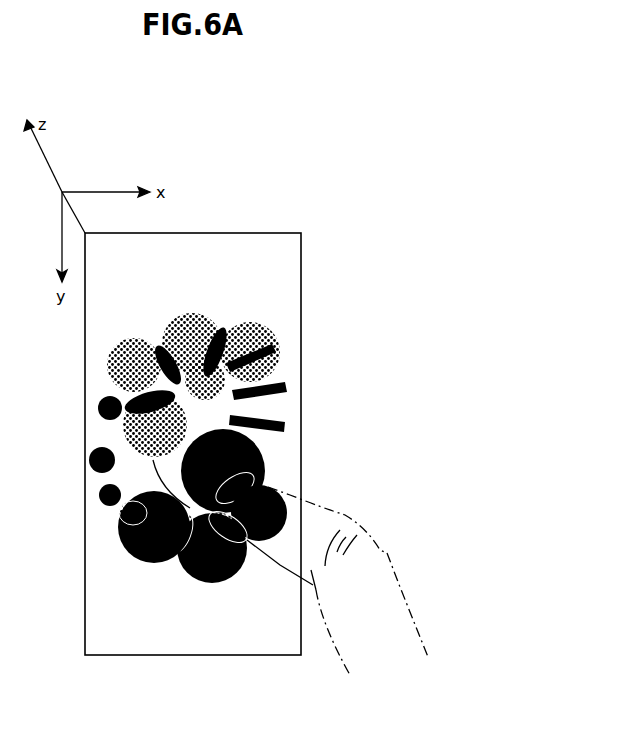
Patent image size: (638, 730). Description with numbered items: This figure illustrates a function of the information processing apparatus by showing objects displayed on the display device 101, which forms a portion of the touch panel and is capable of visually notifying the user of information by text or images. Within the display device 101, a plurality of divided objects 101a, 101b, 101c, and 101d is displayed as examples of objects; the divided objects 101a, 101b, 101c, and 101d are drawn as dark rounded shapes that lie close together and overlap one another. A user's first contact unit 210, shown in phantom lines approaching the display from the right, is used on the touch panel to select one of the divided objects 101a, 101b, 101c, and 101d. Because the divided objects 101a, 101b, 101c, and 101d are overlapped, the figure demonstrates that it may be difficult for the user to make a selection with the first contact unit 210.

The display device 101 is at (240, 233).
The divided object 101a is at (258, 441).
The divided object 101b is at (283, 499).
The divided object 101c is at (201, 583).
The divided object 101d is at (122, 545).
The first contact unit 210 is at (385, 553).